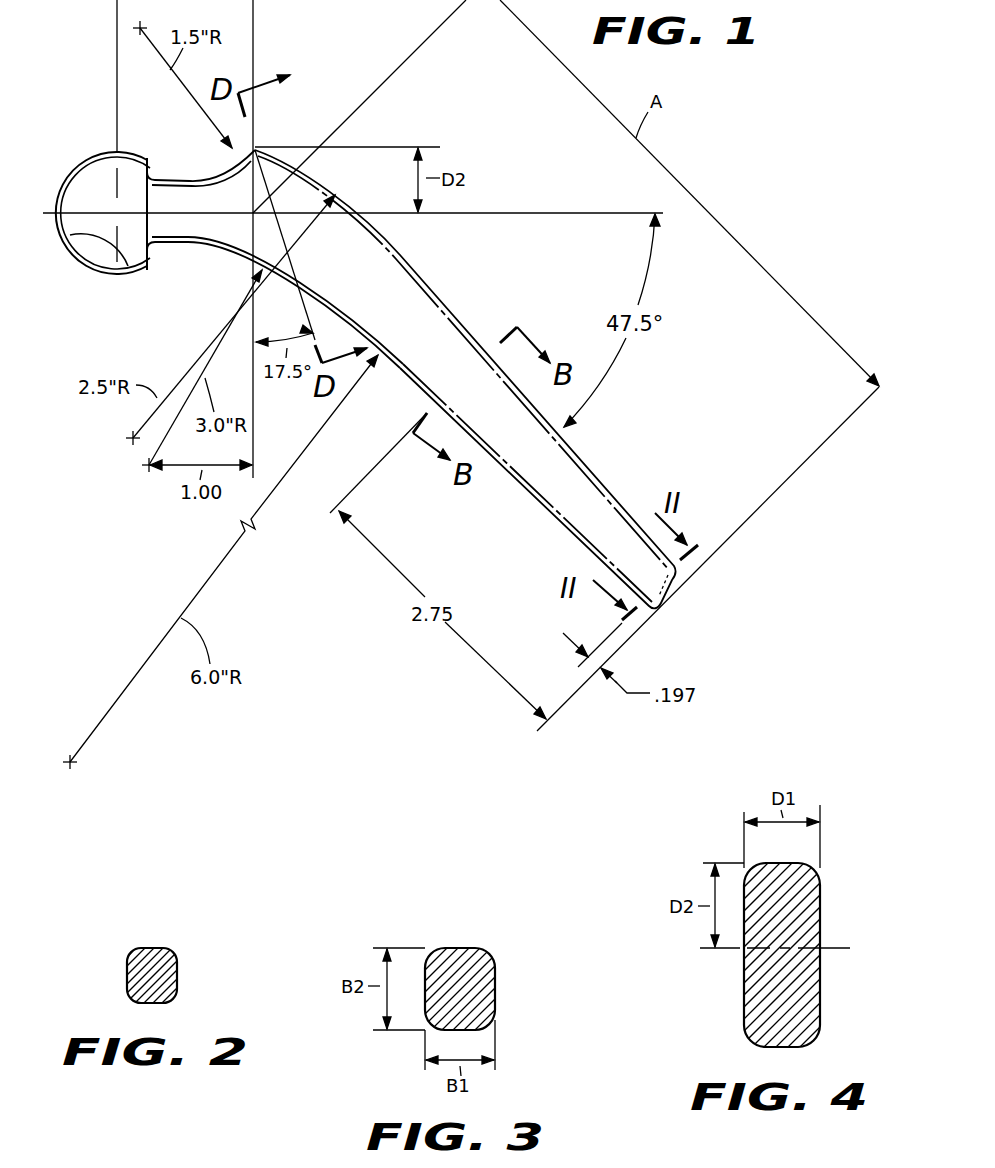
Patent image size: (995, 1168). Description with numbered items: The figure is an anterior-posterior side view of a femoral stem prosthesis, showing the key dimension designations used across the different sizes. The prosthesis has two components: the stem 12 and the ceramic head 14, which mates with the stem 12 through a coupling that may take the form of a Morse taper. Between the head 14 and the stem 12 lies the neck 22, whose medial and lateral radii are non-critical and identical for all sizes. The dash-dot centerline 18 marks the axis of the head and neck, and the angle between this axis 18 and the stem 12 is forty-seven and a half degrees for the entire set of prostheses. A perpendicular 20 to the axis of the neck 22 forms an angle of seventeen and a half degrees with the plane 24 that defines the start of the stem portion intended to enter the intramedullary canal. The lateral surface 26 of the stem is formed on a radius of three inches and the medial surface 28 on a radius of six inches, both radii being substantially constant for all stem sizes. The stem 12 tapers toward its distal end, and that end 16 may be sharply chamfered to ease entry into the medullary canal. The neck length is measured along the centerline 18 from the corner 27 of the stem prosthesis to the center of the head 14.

The stem 12 is at (509, 379).
The ceramic head 14 is at (113, 253).
The chamfered end of the stem 16 is at (680, 577).
The axis of the head and neck 18 is at (510, 214).
The perpendicular to the axis of the neck 20 is at (253, 232).
The neck 22 is at (183, 223).
The plane defining the start of the stem portion 24 is at (268, 202).
The lateral surface of the stem 26 is at (353, 205).
The corner of the stem prosthesis 27 is at (257, 147).
The medial surface of the stem 28 is at (400, 370).